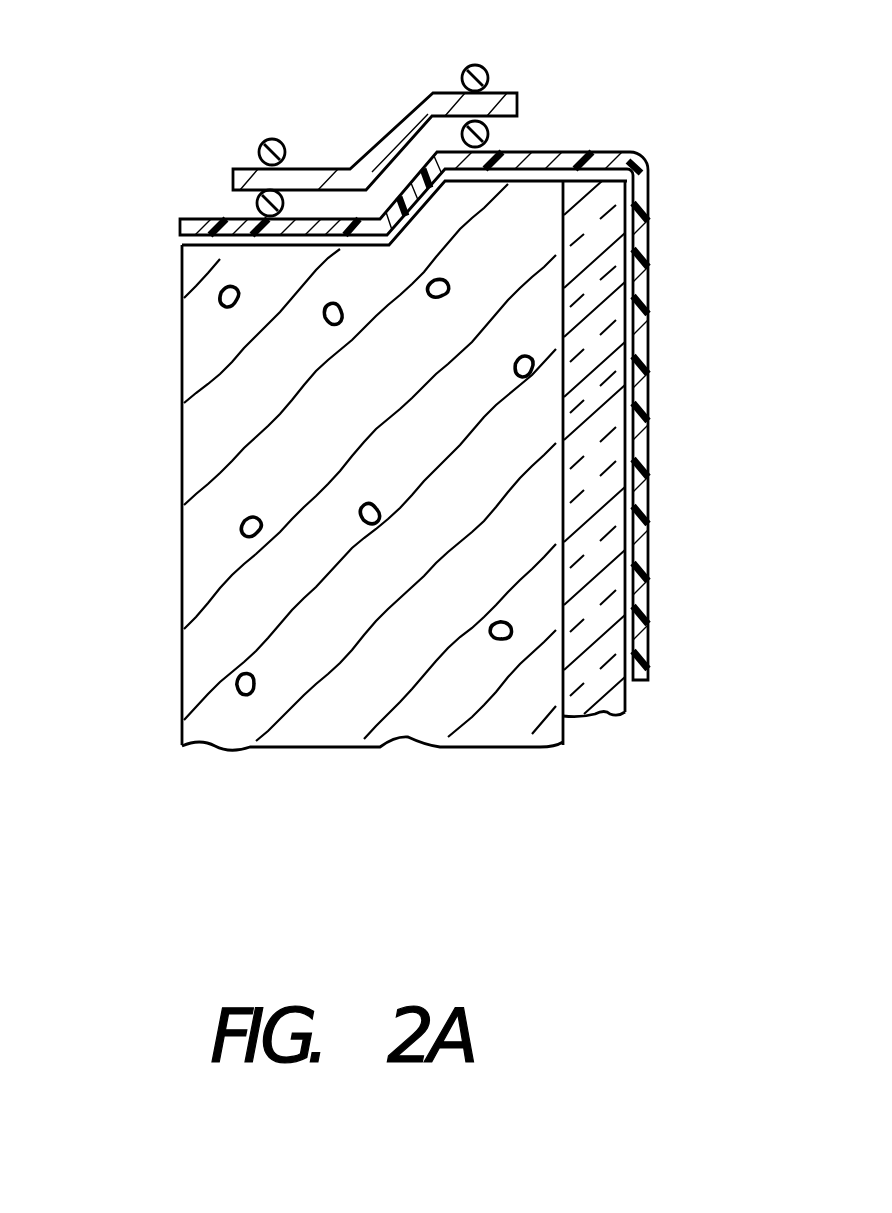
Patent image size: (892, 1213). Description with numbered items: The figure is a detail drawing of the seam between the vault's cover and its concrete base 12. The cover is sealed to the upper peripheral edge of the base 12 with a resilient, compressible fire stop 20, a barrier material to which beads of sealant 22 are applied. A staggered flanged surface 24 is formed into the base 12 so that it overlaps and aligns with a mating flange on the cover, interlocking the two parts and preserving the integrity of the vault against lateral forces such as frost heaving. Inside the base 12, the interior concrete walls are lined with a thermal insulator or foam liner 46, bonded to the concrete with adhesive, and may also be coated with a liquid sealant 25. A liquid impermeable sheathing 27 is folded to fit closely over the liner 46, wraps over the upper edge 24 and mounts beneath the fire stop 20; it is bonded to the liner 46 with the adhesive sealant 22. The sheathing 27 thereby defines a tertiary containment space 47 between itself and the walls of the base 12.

The base 12 is at (182, 352).
The fire stop 20 is at (380, 137).
The beads of sealant 22 is at (259, 195).
The flanged surface 24 is at (232, 242).
The liquid sealant 25 is at (565, 733).
The sheathing 27 is at (650, 452).
The liner 46 is at (595, 357).
The tertiary containment space 47 is at (565, 548).